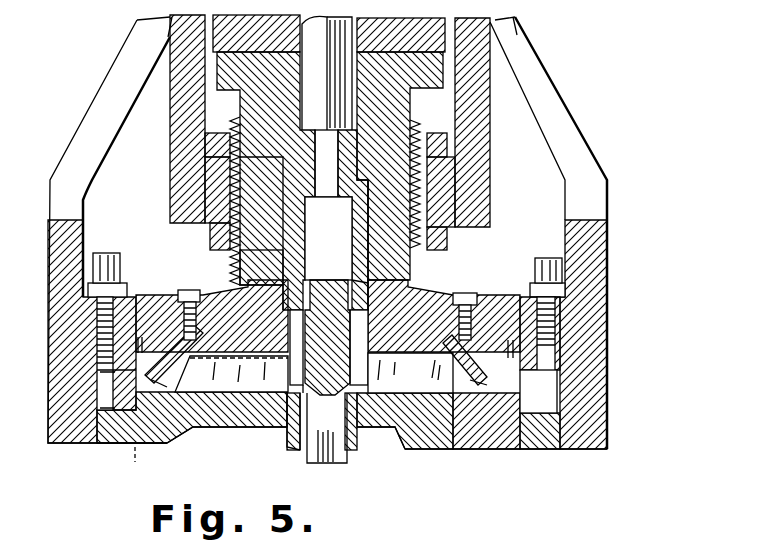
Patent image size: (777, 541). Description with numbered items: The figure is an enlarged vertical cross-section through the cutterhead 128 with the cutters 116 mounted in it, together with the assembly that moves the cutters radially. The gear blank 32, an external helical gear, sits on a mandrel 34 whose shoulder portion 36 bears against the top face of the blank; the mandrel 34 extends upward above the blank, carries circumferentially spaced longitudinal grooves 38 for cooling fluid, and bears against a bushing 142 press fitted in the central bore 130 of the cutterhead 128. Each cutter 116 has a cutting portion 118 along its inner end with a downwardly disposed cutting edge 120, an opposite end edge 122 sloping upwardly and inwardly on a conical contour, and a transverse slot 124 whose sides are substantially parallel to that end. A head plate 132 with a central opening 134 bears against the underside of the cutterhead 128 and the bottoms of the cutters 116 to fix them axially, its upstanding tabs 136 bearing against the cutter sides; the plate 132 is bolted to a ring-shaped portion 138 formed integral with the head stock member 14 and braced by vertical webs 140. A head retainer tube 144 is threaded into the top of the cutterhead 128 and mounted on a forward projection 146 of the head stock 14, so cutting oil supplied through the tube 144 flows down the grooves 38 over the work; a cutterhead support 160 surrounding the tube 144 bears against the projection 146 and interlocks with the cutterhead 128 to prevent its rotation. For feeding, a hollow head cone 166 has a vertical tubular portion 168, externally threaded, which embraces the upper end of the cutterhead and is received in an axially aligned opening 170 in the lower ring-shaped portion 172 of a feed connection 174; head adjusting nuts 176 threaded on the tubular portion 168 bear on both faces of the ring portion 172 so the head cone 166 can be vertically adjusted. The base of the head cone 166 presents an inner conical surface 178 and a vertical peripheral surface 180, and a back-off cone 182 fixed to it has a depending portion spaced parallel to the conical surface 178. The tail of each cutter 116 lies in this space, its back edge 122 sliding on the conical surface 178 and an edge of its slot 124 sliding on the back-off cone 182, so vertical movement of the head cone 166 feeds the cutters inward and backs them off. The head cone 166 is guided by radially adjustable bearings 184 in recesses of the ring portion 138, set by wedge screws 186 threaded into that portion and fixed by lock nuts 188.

The head stock member 14 is at (557, 121).
The gear blank 32 is at (360, 438).
The mandrel 34 is at (330, 464).
The shoulder portion 36 is at (318, 365).
The longitudinally extending grooves 38 is at (306, 280).
The cutters 116 is at (250, 412).
The cutting portion 118 is at (295, 387).
The cutting edge 120 is at (292, 412).
The sloping end edge 122 is at (165, 355).
The transversely extending slot 124 is at (185, 425).
The cutterhead 128 is at (413, 307).
The central bore 130 is at (362, 278).
The head plate 132 is at (290, 422).
The central opening 134 is at (377, 428).
The tabs or projections 136 is at (137, 444).
The ring-shaped portion 138 is at (607, 373).
The vertically extending webs 140 is at (116, 81).
The bushing 142 is at (360, 231).
The head retainer tube 144 is at (313, 59).
The forward projection 146 is at (413, 42).
The cutterhead support 160 is at (405, 82).
The head cone 166 is at (233, 278).
The vertical tubular portion 168 is at (232, 193).
The axially aligned opening 170 is at (230, 168).
The lower ring-shaped portion 172 is at (440, 180).
The feed connection 174 is at (168, 37).
The head adjusting nuts 176 is at (206, 142).
The inner conical surface 178 is at (133, 437).
The vertical peripheral surface 180 is at (118, 396).
The back-off cone 182 is at (204, 360).
The radially adjustable bearings 184 is at (117, 381).
The wedge screws 186 is at (106, 346).
The lock nuts 188 is at (104, 300).